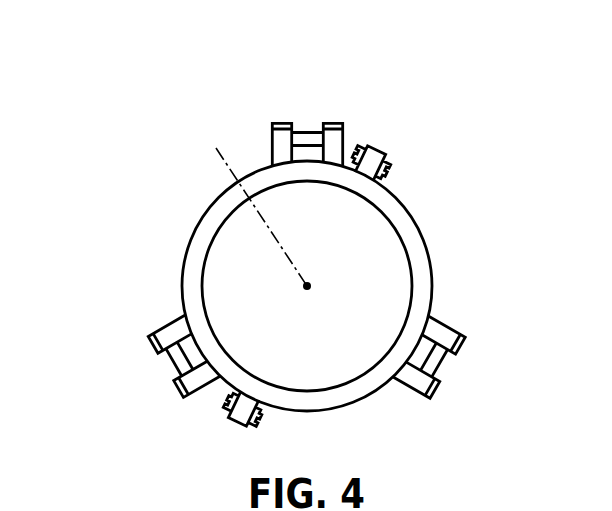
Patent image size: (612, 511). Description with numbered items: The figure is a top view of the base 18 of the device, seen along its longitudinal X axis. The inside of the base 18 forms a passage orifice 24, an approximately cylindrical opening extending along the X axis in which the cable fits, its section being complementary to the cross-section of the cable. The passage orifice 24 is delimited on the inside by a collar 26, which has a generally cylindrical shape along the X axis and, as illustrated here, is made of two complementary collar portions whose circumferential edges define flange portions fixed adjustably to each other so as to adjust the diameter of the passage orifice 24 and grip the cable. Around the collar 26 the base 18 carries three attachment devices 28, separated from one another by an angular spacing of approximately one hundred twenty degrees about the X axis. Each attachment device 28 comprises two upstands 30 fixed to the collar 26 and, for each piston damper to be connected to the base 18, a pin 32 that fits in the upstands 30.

The base 18 is at (131, 288).
The passage orifice 24 is at (232, 233).
The collar 26 is at (418, 263).
The attachment device 28 is at (321, 241).
The upstand 30 is at (438, 332).
The pin 32 is at (437, 352).